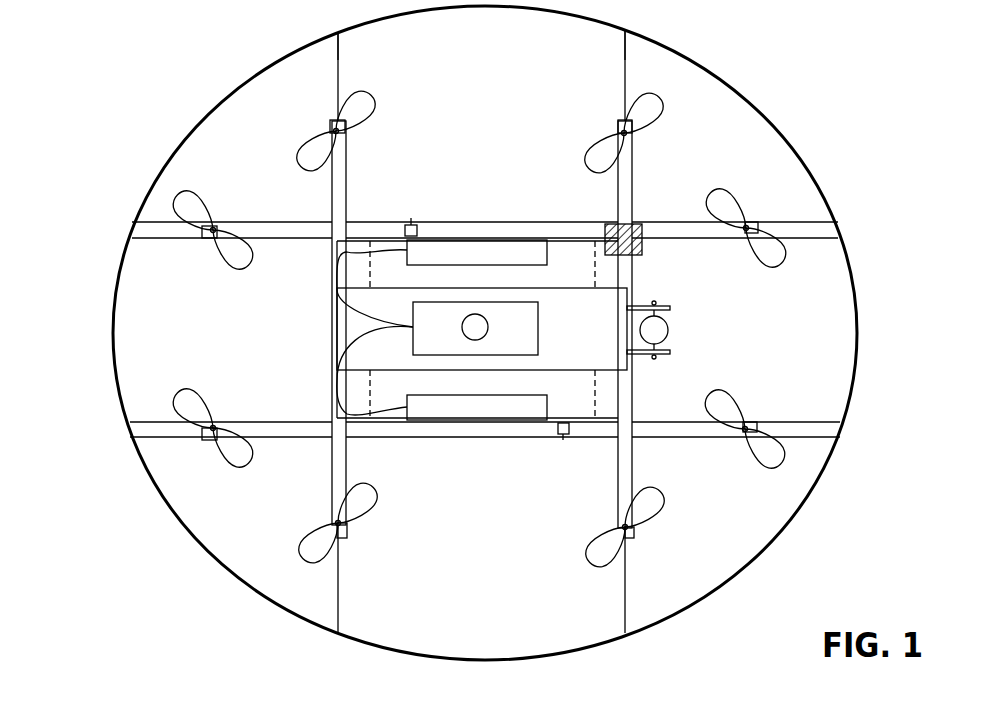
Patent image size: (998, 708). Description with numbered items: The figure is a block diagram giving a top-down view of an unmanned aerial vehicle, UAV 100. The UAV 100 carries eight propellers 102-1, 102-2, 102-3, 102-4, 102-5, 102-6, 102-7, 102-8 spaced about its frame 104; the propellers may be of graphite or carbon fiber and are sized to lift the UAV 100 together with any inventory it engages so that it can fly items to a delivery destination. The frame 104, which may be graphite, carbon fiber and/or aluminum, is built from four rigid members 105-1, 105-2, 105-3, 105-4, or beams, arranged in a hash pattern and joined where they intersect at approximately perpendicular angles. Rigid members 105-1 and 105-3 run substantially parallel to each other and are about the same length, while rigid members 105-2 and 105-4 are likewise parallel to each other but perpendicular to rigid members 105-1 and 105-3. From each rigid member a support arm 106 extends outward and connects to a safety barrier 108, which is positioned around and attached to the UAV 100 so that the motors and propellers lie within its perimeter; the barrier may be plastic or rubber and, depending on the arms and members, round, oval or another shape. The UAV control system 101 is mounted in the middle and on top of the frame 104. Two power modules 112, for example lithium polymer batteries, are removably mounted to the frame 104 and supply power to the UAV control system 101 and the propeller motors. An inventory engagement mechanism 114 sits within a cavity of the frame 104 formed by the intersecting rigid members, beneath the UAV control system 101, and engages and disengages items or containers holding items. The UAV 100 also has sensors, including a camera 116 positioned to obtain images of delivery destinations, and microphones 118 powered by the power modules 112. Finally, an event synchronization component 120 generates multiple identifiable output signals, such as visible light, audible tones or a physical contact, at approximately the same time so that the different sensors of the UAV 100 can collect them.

The UAV 100 is at (898, 79).
The UAV control system 101 is at (482, 332).
The propeller 102-1 is at (377, 100).
The propeller 102-2 is at (664, 106).
The propeller 102-3 is at (775, 262).
The propeller 102-4 is at (735, 393).
The propeller 102-5 is at (657, 498).
The propeller 102-6 is at (373, 497).
The propeller 102-7 is at (200, 393).
The propeller 102-8 is at (202, 192).
The frame 104 is at (332, 195).
The rigid member 105-1 is at (646, 222).
The rigid member 105-2 is at (633, 182).
The rigid member 105-3 is at (653, 422).
The rigid member 105-4 is at (346, 186).
The support arm 106 is at (337, 62).
The safety barrier 108 is at (733, 87).
The power module 112 is at (477, 330).
The inventory engagement mechanism 114 is at (570, 240).
The camera 116 is at (670, 330).
The microphone 118 is at (412, 220).
The event synchronization component 120 is at (643, 247).